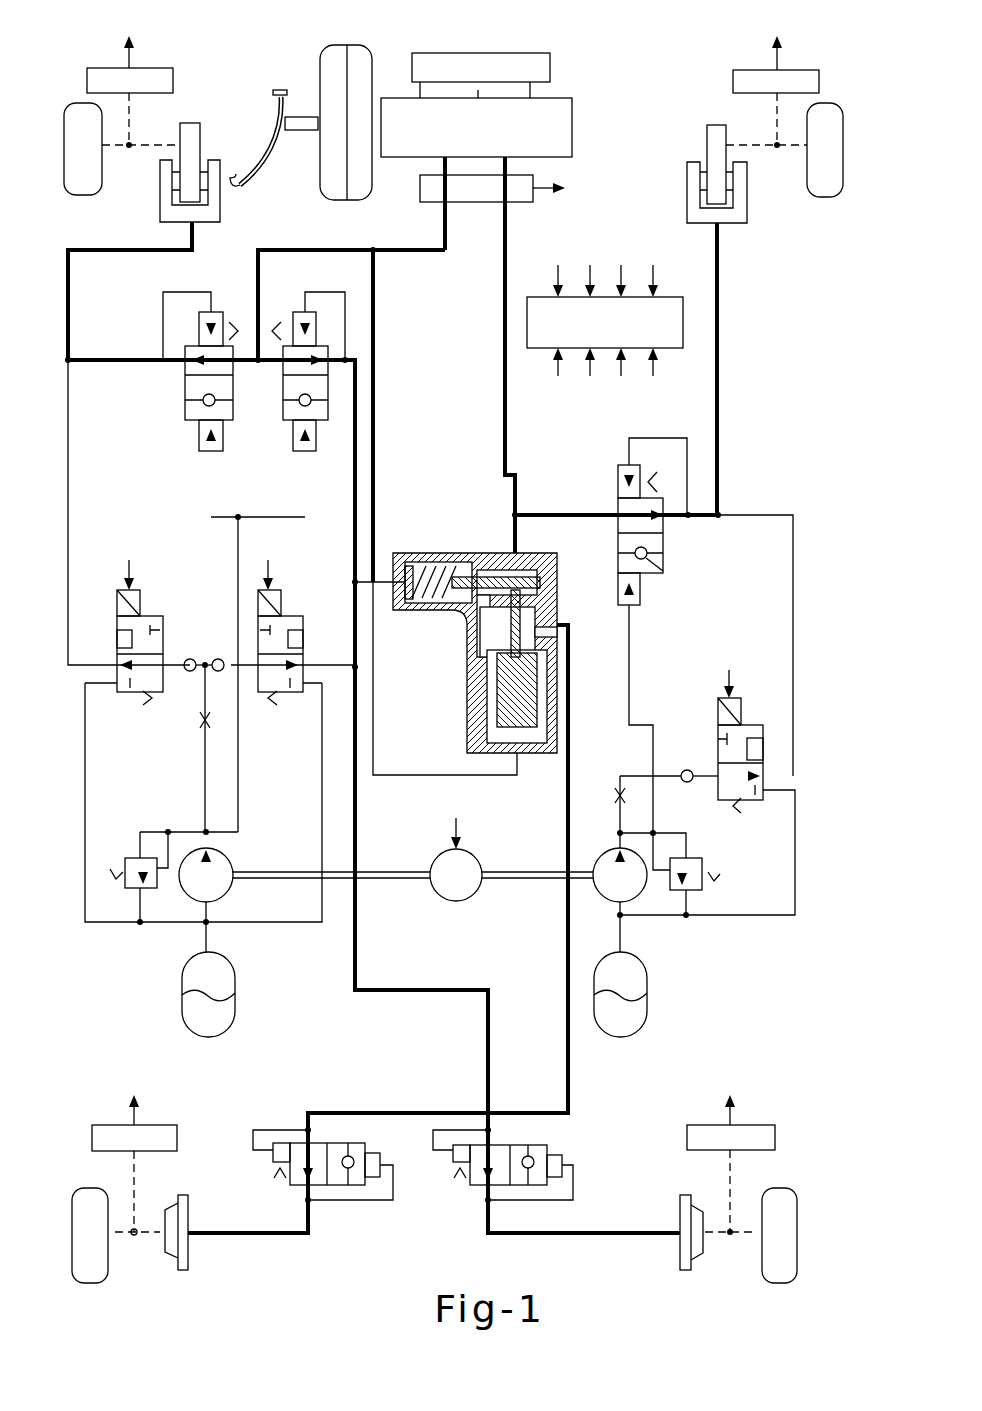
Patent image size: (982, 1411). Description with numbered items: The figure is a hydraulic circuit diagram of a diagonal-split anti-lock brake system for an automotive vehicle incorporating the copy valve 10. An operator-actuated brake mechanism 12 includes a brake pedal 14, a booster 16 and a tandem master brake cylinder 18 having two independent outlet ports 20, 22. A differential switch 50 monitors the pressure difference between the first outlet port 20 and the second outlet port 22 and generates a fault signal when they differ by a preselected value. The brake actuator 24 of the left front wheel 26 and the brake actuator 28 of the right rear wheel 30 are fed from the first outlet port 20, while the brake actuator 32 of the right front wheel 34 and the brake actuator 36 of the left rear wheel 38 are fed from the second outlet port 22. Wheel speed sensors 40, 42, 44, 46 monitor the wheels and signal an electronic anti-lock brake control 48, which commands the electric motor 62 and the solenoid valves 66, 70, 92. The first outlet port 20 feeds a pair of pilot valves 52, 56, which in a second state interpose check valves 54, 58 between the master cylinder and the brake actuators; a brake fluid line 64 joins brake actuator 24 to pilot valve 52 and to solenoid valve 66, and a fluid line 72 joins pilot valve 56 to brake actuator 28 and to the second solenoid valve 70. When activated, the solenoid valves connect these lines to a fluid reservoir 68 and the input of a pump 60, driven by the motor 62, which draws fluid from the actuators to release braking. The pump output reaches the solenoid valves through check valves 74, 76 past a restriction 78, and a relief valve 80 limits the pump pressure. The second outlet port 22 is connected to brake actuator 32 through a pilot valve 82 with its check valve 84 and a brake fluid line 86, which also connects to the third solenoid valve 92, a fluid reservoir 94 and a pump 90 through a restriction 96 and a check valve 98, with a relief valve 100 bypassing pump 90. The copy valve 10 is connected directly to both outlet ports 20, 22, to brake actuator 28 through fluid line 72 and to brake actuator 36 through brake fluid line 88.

The copy valve 10 is at (467, 658).
The operator-actuated brake mechanism 12 is at (588, 71).
The brake pedal 14 is at (270, 152).
The booster 16 is at (372, 52).
The tandem master brake cylinder 18 is at (572, 138).
The first outlet port 20 is at (440, 160).
The second outlet port 22 is at (508, 158).
The brake actuator 24 is at (220, 172).
The left front wheel 26 is at (102, 170).
The brake actuator 28 is at (703, 1250).
The right rear wheel 30 is at (797, 1220).
The brake actuator 32 is at (747, 200).
The right front wheel 34 is at (838, 195).
The brake actuator 36 is at (170, 1203).
The left rear wheel 38 is at (108, 1258).
The wheel speed sensor 40 is at (112, 70).
The wheel speed sensor 42 is at (708, 1122).
The wheel speed sensor 44 is at (733, 82).
The wheel speed sensor 46 is at (165, 1120).
The electronic anti-lock brake control 48 is at (683, 305).
The differential switch 50 is at (420, 202).
The pilot valve 52 is at (185, 380).
The check valve 54 is at (203, 401).
The pilot valve 56 is at (283, 386).
The check valve 58 is at (311, 403).
The pump 60 is at (232, 860).
The electric motor 62 is at (480, 858).
The brake fluid line 64 is at (133, 357).
The solenoid valve 66 is at (157, 613).
The fluid reservoir 68 is at (235, 978).
The second solenoid valve 70 is at (297, 613).
The fluid line 72 is at (353, 468).
The check valve 74 is at (190, 659).
The check valve 76 is at (218, 659).
The restriction 78 is at (208, 716).
The relief valve 80 is at (128, 856).
The pilot valve 82 is at (663, 519).
The check valve 84 is at (647, 557).
The brake fluid line 86 is at (706, 512).
The brake fluid line 88 is at (400, 1110).
The pump 90 is at (604, 856).
The third solenoid valve 92 is at (718, 752).
The fluid reservoir 94 is at (647, 978).
The restriction 96 is at (616, 790).
The check valve 98 is at (690, 784).
The relief valve 100 is at (704, 860).